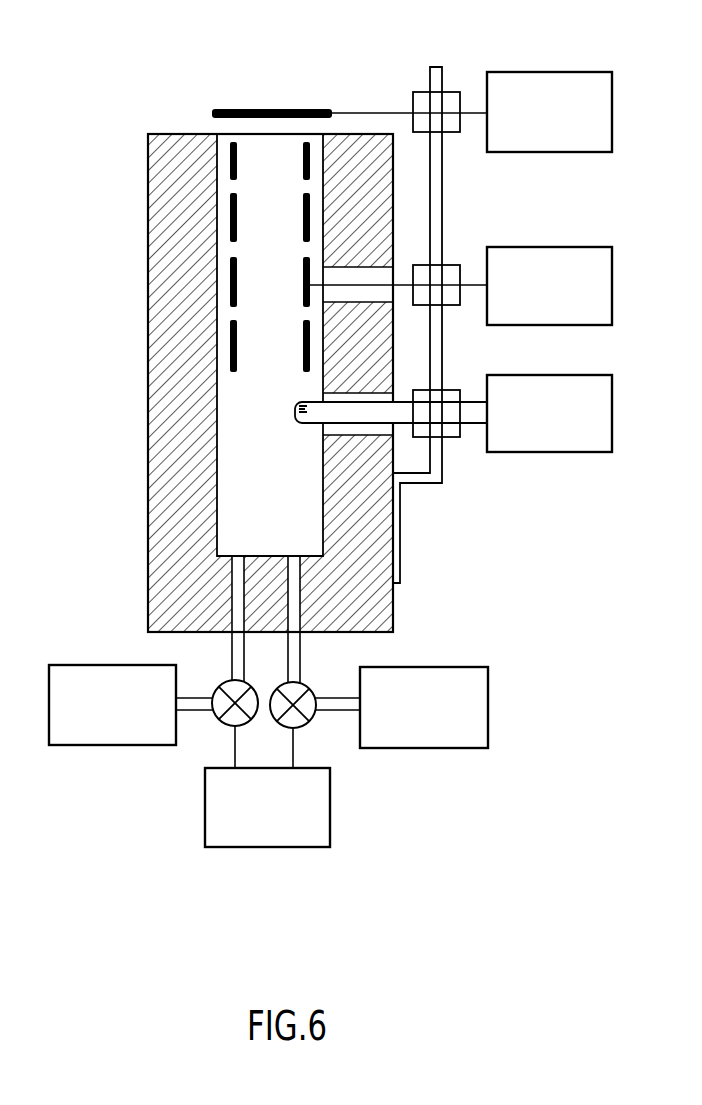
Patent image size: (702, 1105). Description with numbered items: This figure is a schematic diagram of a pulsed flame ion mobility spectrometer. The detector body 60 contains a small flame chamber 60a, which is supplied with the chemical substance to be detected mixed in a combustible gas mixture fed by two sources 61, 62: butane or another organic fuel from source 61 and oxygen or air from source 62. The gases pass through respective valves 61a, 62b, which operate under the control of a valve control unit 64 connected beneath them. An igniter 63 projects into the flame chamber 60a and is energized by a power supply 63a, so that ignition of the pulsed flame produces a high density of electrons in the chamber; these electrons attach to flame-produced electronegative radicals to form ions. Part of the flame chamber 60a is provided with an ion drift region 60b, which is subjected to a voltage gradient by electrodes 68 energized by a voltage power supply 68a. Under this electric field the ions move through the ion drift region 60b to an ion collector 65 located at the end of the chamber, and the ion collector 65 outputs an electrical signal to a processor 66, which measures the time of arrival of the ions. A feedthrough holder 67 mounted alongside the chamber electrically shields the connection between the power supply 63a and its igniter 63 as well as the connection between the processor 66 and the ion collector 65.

The processing chamber body 60 is at (146, 407).
The flame chamber 60a is at (312, 517).
The ion drift region 60b is at (297, 200).
The source 61 is at (127, 722).
The valve 61a is at (216, 724).
The source 62 is at (450, 728).
The second valve 62b is at (314, 728).
The igniter 63 is at (292, 413).
The power supply 63a is at (586, 433).
The valve control unit 64 is at (290, 823).
The ion collector 65 is at (296, 107).
The processor 66 is at (578, 129).
The feedthrough holder 67 is at (445, 475).
The electrodes 68 is at (298, 270).
The voltage power supply 68a is at (582, 302).